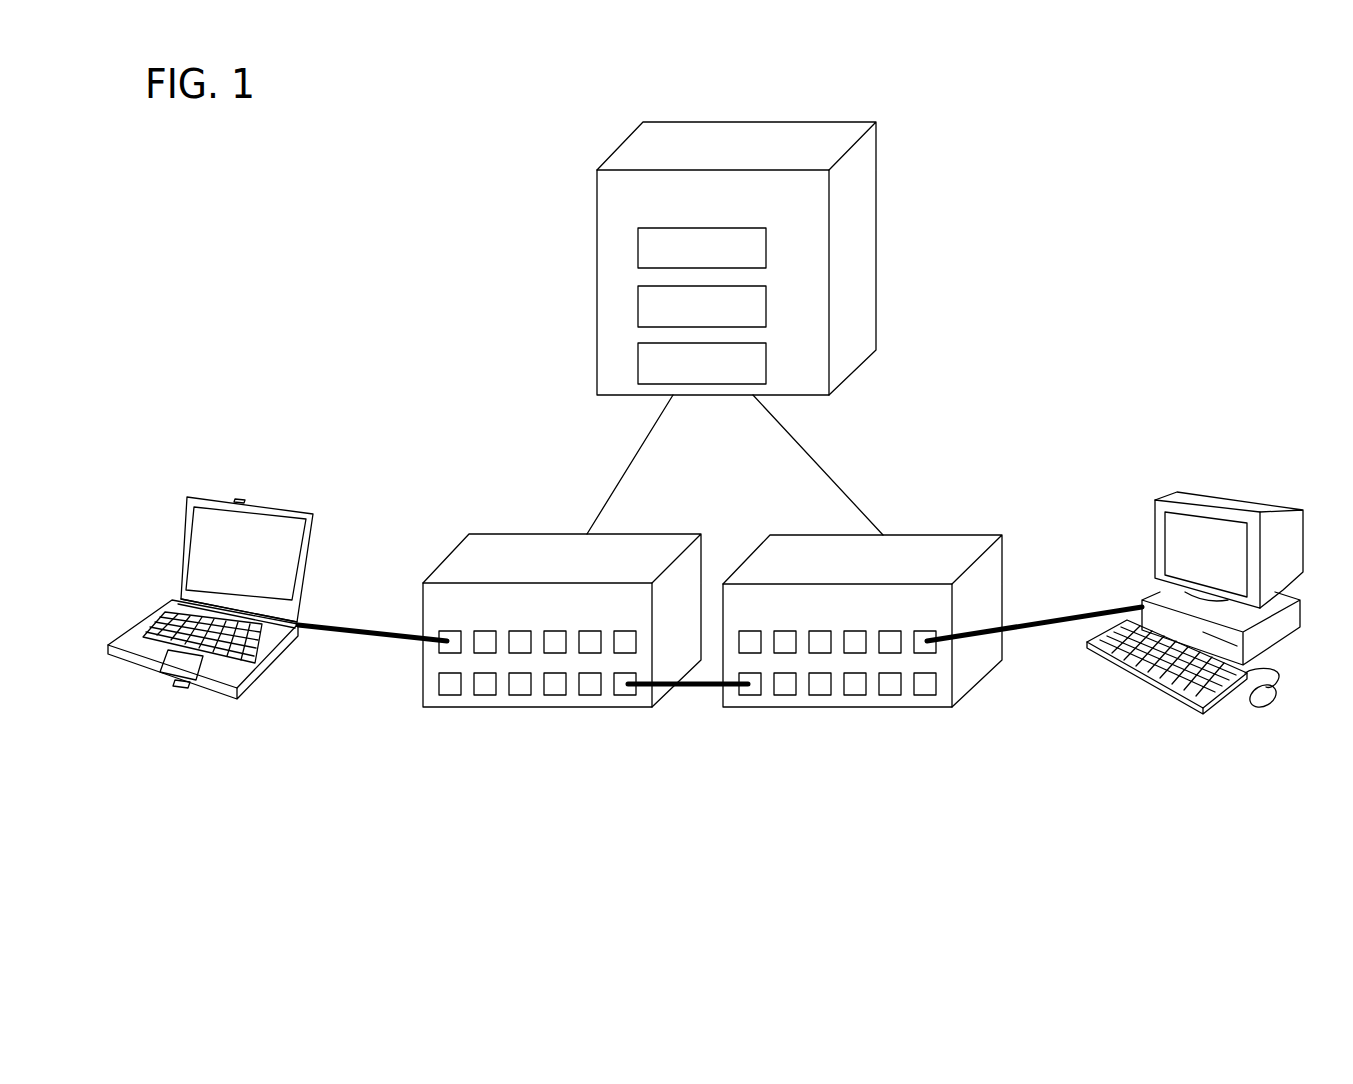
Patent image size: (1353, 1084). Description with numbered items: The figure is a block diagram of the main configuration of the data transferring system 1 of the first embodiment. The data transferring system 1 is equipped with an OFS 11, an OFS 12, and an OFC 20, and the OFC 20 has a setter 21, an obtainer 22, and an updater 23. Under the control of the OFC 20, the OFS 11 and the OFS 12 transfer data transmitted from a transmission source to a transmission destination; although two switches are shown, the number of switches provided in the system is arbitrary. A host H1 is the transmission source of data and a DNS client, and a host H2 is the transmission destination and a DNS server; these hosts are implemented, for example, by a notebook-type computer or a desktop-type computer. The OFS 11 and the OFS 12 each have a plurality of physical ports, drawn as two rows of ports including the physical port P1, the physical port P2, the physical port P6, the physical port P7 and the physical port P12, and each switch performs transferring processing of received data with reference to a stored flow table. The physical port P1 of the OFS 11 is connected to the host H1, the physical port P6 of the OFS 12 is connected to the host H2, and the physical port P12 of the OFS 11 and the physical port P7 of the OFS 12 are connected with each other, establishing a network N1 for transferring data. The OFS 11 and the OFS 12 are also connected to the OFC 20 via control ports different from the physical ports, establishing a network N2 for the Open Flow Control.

The data transferring system 1 is at (1090, 142).
The OFC (Open Flow Controller) 20 is at (795, 122).
The setter 21 is at (767, 250).
The obtainer 22 is at (767, 308).
The updater 23 is at (767, 365).
The OFS (Open Flow Switch) 11 is at (642, 534).
The OFS (Open Flow Switch) 12 is at (973, 535).
The host H1 is at (272, 502).
The host H2 is at (1250, 498).
The network N1 is at (418, 760).
The network N2 is at (895, 395).
The physical port P1 is at (450, 631).
The physical port P2 is at (485, 631).
The physical port P6 is at (624, 631).
The physical port P7 is at (449, 695).
The physical port P12 is at (626, 695).